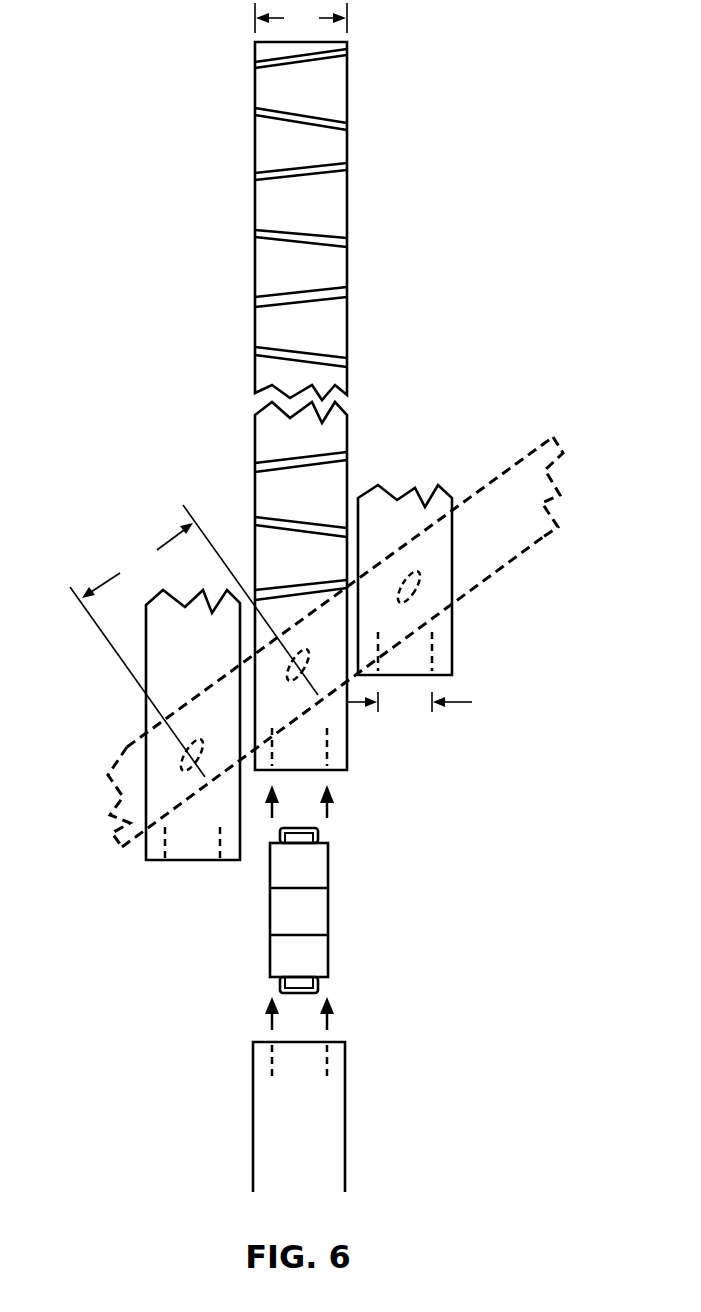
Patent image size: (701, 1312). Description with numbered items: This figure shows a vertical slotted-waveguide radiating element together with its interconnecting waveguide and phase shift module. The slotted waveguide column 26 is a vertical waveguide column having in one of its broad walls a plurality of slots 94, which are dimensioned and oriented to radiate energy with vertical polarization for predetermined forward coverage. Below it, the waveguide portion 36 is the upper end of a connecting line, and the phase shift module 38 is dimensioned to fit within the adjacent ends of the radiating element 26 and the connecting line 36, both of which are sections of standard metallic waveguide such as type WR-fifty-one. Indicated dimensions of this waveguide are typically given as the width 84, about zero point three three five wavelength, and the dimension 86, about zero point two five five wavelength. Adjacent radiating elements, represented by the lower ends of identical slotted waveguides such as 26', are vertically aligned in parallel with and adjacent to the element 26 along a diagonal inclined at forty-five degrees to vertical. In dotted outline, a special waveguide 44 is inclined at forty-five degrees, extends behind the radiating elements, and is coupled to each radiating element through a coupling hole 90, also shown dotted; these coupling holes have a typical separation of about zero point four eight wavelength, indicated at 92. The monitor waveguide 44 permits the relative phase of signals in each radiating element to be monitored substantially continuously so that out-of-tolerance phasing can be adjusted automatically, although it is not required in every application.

The slotted waveguide column 26 is at (349, 406).
The slots 94 is at (349, 232).
The waveguide dimension 84 is at (301, 18).
The coupling hole separation 92 is at (194, 641).
The adjacent slotted waveguide 26' is at (163, 725).
The coupling hole 90 is at (405, 578).
The special waveguide 44 is at (543, 540).
The waveguide dimension 86 is at (410, 703).
The phase shift module 38 is at (330, 910).
The waveguide portion 36 is at (347, 1103).